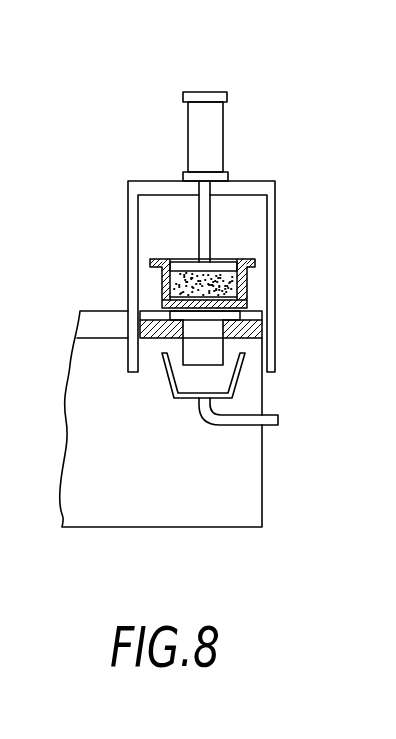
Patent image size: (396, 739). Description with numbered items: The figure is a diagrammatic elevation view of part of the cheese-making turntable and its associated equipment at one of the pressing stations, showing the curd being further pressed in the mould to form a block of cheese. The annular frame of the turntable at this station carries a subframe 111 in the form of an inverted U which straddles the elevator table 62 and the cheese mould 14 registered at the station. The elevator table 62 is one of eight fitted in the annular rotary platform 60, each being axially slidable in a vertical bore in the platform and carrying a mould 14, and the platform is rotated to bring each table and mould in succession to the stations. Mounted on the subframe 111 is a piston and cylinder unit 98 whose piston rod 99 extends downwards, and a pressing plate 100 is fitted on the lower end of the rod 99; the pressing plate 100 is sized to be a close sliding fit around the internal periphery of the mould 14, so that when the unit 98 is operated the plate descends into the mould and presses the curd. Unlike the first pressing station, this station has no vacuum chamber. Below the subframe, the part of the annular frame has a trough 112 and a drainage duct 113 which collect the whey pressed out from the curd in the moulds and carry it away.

The piston and cylinder unit 98 is at (223, 113).
The piston rod 99 is at (211, 212).
The subframe 111 is at (277, 219).
The pressing plate 100 is at (243, 258).
The cheese mould 14 is at (250, 292).
The rotary platform 60 is at (262, 323).
The elevator table 62 is at (207, 348).
The trough 112 is at (168, 375).
The drainage duct 113 is at (228, 430).